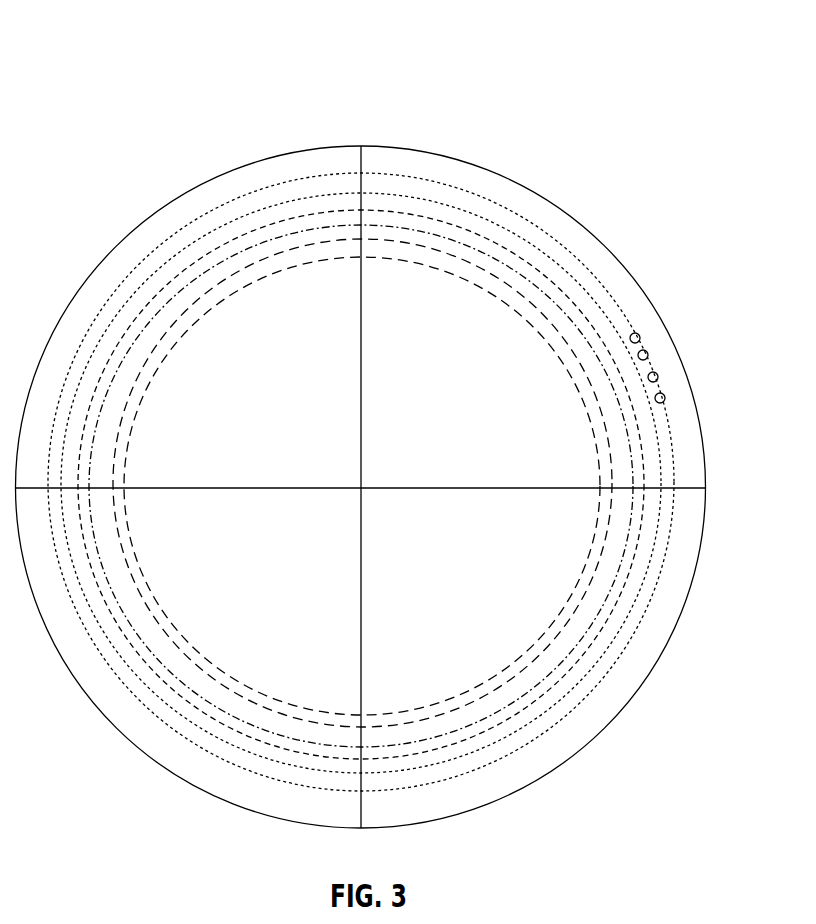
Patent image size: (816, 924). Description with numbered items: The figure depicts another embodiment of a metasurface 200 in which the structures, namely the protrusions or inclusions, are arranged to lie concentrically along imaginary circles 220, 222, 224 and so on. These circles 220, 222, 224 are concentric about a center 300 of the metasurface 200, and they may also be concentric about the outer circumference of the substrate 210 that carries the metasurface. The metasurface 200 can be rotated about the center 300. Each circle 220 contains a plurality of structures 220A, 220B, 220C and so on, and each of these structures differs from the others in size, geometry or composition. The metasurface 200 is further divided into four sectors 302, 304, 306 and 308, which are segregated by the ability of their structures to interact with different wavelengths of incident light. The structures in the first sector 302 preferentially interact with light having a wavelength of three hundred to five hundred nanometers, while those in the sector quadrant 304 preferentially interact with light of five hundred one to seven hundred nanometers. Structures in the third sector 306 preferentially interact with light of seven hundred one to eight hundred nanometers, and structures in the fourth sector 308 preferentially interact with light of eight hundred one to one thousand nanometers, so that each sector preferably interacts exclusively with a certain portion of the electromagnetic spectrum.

The metasurface 200 is at (677, 50).
The substrate 210 is at (628, 272).
The circle 220 is at (553, 243).
The structure 220A is at (640, 334).
The structure 220B is at (648, 356).
The structure 220C is at (658, 378).
The circle 222 is at (640, 478).
The circle 224 is at (598, 553).
The center 300 is at (361, 488).
The first sector 302 is at (288, 372).
The sector quadrant 304 is at (288, 633).
The third sector 306 is at (488, 372).
The fourth sector 308 is at (487, 633).